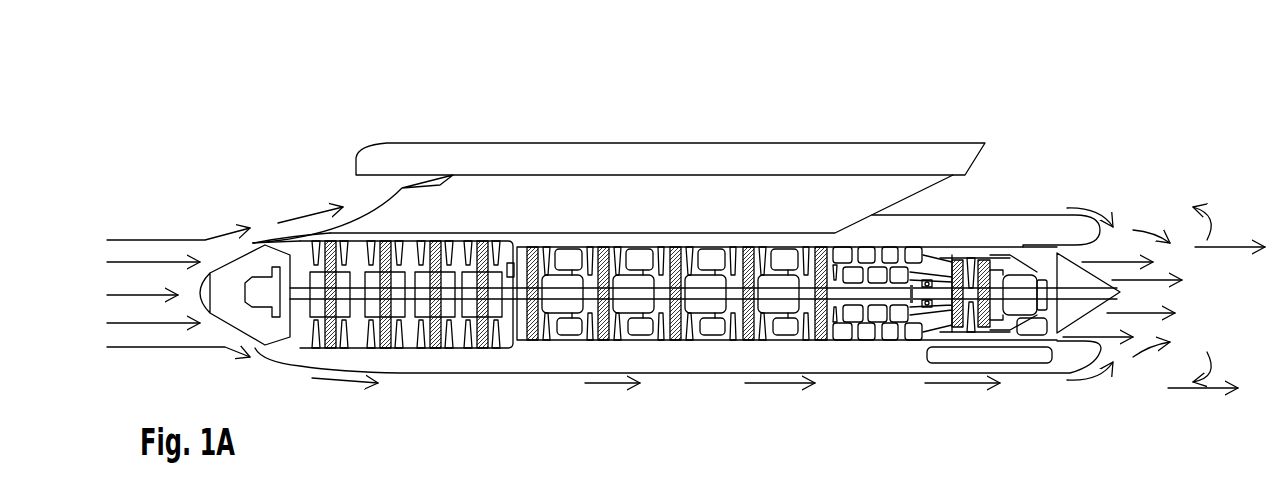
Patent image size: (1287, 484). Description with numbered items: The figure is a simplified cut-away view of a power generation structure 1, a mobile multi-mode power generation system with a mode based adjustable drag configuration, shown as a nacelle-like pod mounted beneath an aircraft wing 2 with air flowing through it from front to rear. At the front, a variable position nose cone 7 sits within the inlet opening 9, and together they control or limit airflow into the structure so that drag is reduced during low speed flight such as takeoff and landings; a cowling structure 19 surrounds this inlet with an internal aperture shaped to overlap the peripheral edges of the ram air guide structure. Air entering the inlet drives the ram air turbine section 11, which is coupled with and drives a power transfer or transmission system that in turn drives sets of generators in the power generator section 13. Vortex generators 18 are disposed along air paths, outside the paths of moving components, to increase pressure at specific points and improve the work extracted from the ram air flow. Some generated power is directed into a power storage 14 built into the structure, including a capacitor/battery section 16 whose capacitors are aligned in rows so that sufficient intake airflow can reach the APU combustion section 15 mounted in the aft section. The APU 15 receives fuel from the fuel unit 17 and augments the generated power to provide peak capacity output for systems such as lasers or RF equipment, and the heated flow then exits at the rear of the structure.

The power generation structure 1 is at (400, 122).
The aircraft wing 2 is at (780, 152).
The variable nose cone actuator 7 is at (253, 290).
The inlet opening 9 is at (262, 240).
The cowling structure 19 is at (258, 240).
The ram air turbine section 11 is at (500, 418).
The vortex generators 18 is at (515, 262).
The power generator section 13 is at (790, 420).
The power storage 14 is at (903, 420).
The capacitor/battery section 16 is at (868, 334).
The APU combustion section 15 is at (943, 270).
The fuel unit 17 is at (1112, 420).